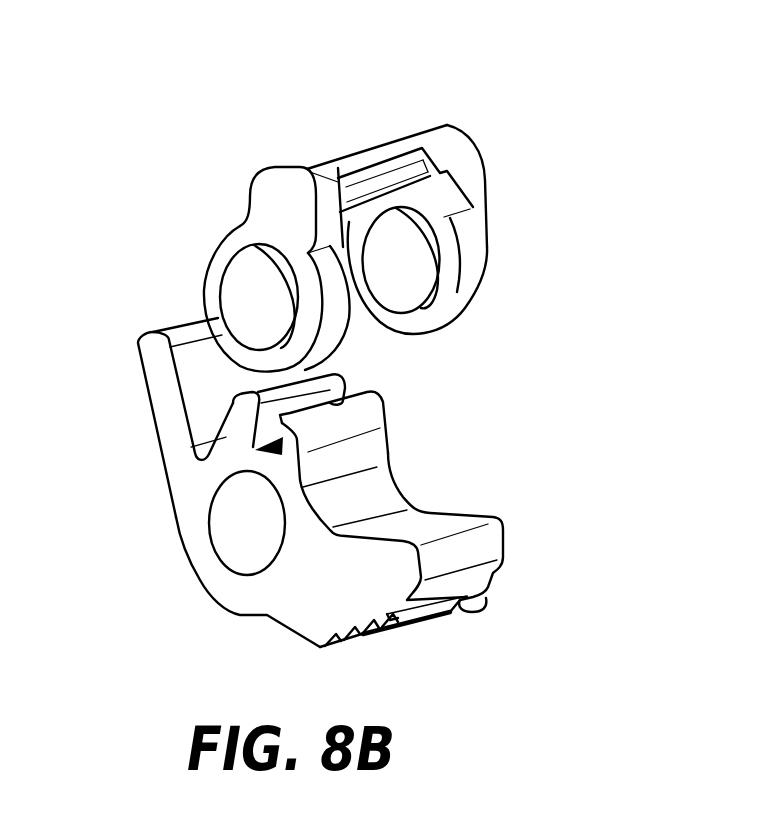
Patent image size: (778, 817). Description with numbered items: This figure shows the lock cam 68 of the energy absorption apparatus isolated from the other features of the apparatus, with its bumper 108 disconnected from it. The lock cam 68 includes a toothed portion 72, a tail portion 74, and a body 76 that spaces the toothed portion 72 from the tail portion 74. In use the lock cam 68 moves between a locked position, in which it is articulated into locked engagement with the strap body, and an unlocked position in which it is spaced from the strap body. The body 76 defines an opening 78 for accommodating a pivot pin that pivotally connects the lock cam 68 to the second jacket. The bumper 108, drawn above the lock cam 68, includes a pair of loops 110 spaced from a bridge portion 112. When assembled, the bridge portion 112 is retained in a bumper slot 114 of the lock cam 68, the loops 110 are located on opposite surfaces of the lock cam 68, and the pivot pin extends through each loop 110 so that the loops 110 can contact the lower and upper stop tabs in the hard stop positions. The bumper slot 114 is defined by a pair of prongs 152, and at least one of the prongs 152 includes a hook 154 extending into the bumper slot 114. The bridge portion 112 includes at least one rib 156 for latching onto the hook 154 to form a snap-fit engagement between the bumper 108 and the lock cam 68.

The lock cam 68 is at (141, 323).
The toothed portion 72 is at (457, 607).
The tail portion 74 is at (153, 401).
The body 76 is at (368, 489).
The opening 78 is at (238, 520).
The bumper 108 is at (439, 121).
The loops 110 is at (472, 267).
The bridge portion 112 is at (350, 160).
The bumper slot 114 is at (330, 397).
The prongs 152 is at (350, 427).
The hook 154 is at (273, 453).
The rib 156 is at (393, 171).